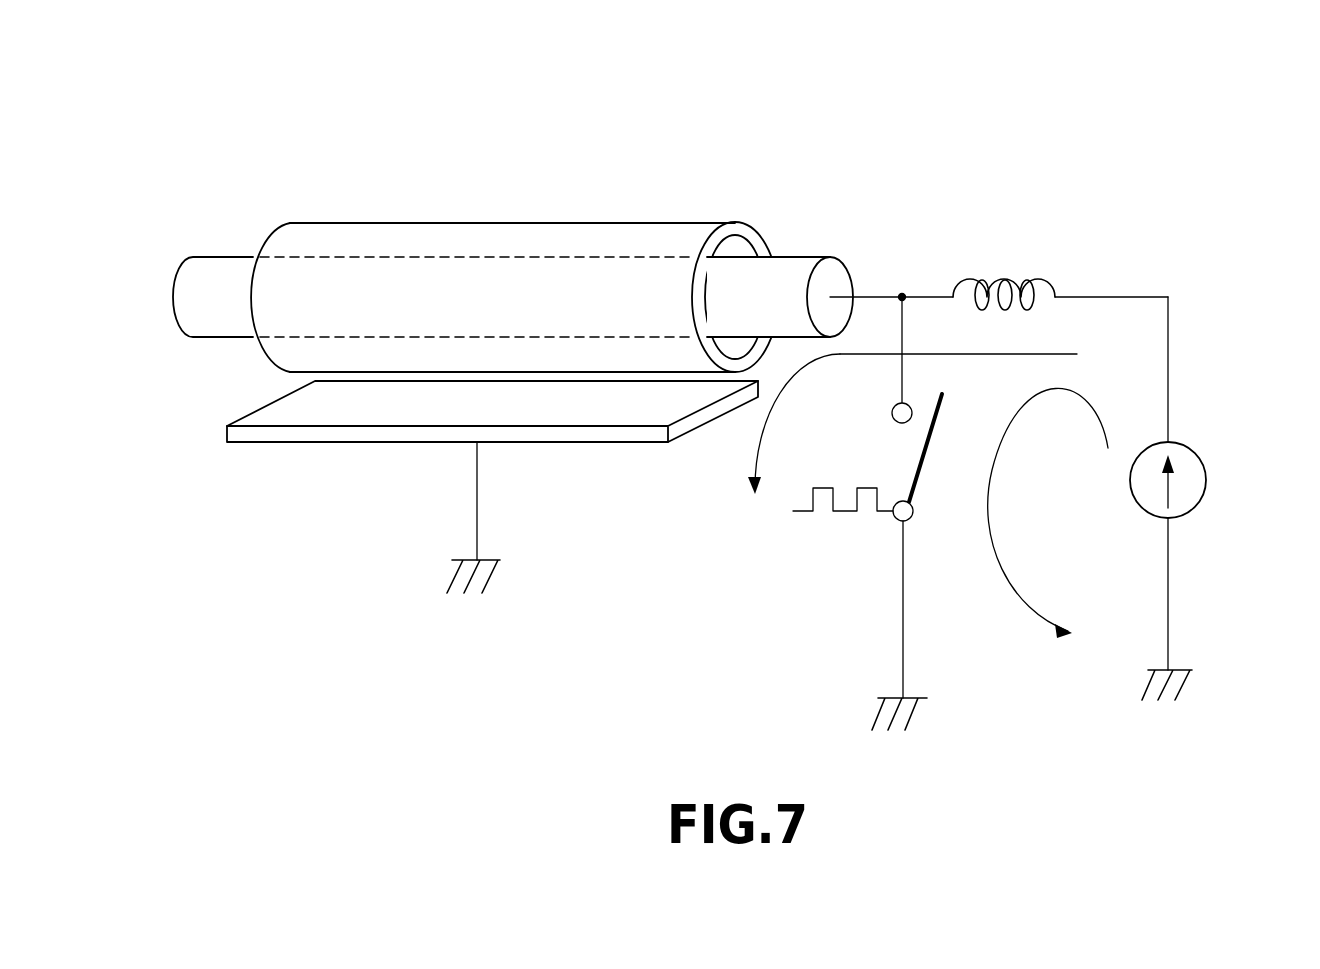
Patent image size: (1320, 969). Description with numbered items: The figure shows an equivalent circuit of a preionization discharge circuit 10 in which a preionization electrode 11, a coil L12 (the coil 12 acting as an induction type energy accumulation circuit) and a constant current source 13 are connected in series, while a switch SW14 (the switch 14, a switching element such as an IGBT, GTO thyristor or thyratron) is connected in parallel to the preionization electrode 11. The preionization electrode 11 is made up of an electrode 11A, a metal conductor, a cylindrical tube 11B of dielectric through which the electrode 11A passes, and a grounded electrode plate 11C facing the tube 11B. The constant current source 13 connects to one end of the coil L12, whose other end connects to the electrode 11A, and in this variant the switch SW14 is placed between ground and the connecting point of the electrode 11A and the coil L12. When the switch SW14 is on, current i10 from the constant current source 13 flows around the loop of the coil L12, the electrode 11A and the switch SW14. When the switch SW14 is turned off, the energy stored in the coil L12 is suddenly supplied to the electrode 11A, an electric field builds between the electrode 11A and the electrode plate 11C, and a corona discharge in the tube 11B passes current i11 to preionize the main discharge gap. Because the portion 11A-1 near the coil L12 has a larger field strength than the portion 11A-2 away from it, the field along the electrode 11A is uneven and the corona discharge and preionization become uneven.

The preionization discharge circuit 10 is at (277, 56).
The preionization electrode 11 is at (796, 100).
The electrode 11A is at (800, 257).
The portion close to the coil 11A-1 is at (649, 188).
The portion away from the coil 11A-2 is at (354, 188).
The cylindrical tube 11B is at (495, 223).
The electrode plate 11C is at (352, 442).
The coil 12 is at (1004, 274).
The coil L12 is at (1004, 274).
The constant current source 13 is at (1207, 480).
The switch 14 is at (909, 513).
The switch SW14 is at (943, 403).
The current i10 is at (1000, 565).
The electric current i11 is at (912, 424).